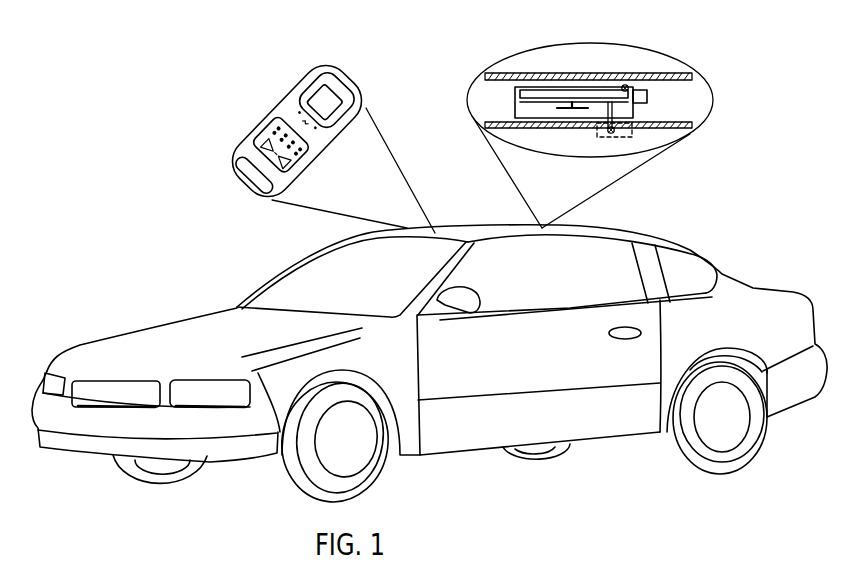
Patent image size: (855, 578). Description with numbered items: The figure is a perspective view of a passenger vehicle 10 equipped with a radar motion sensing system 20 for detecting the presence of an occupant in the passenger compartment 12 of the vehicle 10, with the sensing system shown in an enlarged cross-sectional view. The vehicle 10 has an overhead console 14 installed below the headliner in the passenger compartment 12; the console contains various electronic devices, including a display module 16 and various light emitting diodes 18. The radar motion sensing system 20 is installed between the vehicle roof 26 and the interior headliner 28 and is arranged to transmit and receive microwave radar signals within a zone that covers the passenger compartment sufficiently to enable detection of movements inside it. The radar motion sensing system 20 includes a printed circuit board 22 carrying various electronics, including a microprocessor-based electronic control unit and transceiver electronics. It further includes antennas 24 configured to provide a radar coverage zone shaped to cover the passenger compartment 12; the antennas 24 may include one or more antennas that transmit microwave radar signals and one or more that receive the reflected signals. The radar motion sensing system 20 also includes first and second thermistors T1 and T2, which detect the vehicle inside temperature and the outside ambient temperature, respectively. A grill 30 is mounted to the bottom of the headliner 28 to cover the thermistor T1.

The passenger vehicle 10 is at (157, 277).
The passenger compartment 12 is at (642, 268).
The overhead console 14 is at (288, 79).
The display module 16 is at (333, 100).
The light emitting diodes 18 is at (273, 137).
The radar motion sensing system 20 is at (667, 98).
The printed circuit board 22 is at (516, 108).
The antennas 24 is at (573, 113).
The vehicle roof 26 is at (522, 74).
The interior headliner 28 is at (577, 128).
The grill 30 is at (613, 139).
The first thermistor T1 is at (618, 133).
The second thermistor T2 is at (627, 85).